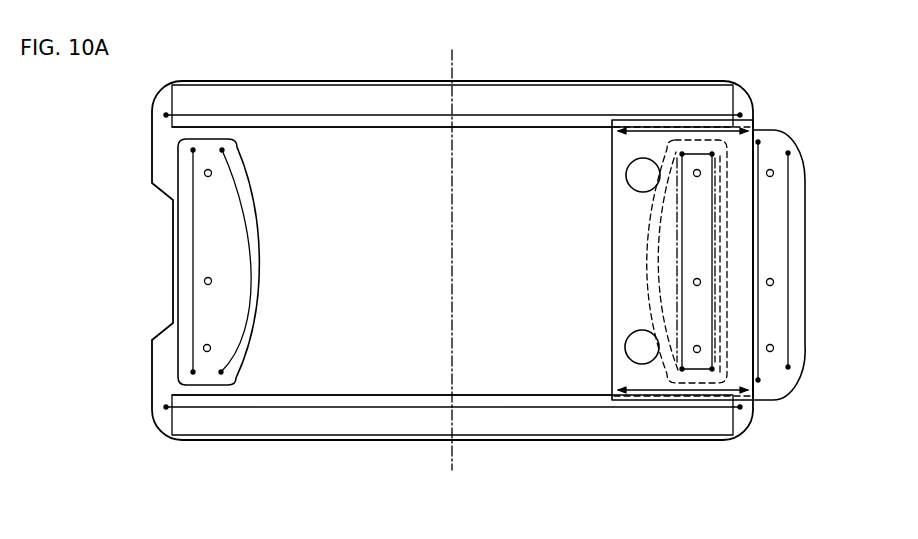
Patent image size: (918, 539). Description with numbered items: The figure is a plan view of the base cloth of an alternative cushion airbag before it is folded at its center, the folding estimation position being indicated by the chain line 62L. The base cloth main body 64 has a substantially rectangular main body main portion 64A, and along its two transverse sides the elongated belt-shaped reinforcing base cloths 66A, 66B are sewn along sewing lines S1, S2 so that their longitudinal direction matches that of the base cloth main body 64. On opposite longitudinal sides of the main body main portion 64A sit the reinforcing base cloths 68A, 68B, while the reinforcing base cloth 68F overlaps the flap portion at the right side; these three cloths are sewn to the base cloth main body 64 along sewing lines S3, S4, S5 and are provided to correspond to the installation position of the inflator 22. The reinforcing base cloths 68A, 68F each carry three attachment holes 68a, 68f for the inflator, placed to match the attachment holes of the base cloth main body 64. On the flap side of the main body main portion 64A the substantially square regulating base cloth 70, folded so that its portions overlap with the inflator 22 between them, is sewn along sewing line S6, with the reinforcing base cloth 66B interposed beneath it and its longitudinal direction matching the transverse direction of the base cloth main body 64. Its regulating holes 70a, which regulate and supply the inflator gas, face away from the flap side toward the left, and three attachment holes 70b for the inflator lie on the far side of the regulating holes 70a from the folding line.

The inflator 22 is at (738, 340).
The chain line 62L is at (455, 95).
The base cloth main body 64 is at (575, 80).
The main body main portion 64A is at (527, 81).
The reinforcing base cloth 66A is at (386, 102).
The reinforcing base cloth 66B is at (393, 432).
The reinforcing base cloth 68A is at (172, 184).
The attachment holes 68a is at (212, 177).
The reinforcing base cloth 68B is at (647, 238).
The reinforcing base cloth 68F is at (804, 238).
The attachment holes 68f is at (774, 175).
The regulating base cloth 70 is at (620, 276).
The regulating holes 70a is at (626, 175).
The attachment holes 70b is at (694, 176).
The sewing line S1 is at (383, 127).
The sewing line S2 is at (390, 403).
The sewing line S3 is at (193, 247).
The sewing line S4 is at (718, 163).
The sewing line S5 is at (762, 322).
The sewing line S6 is at (697, 130).